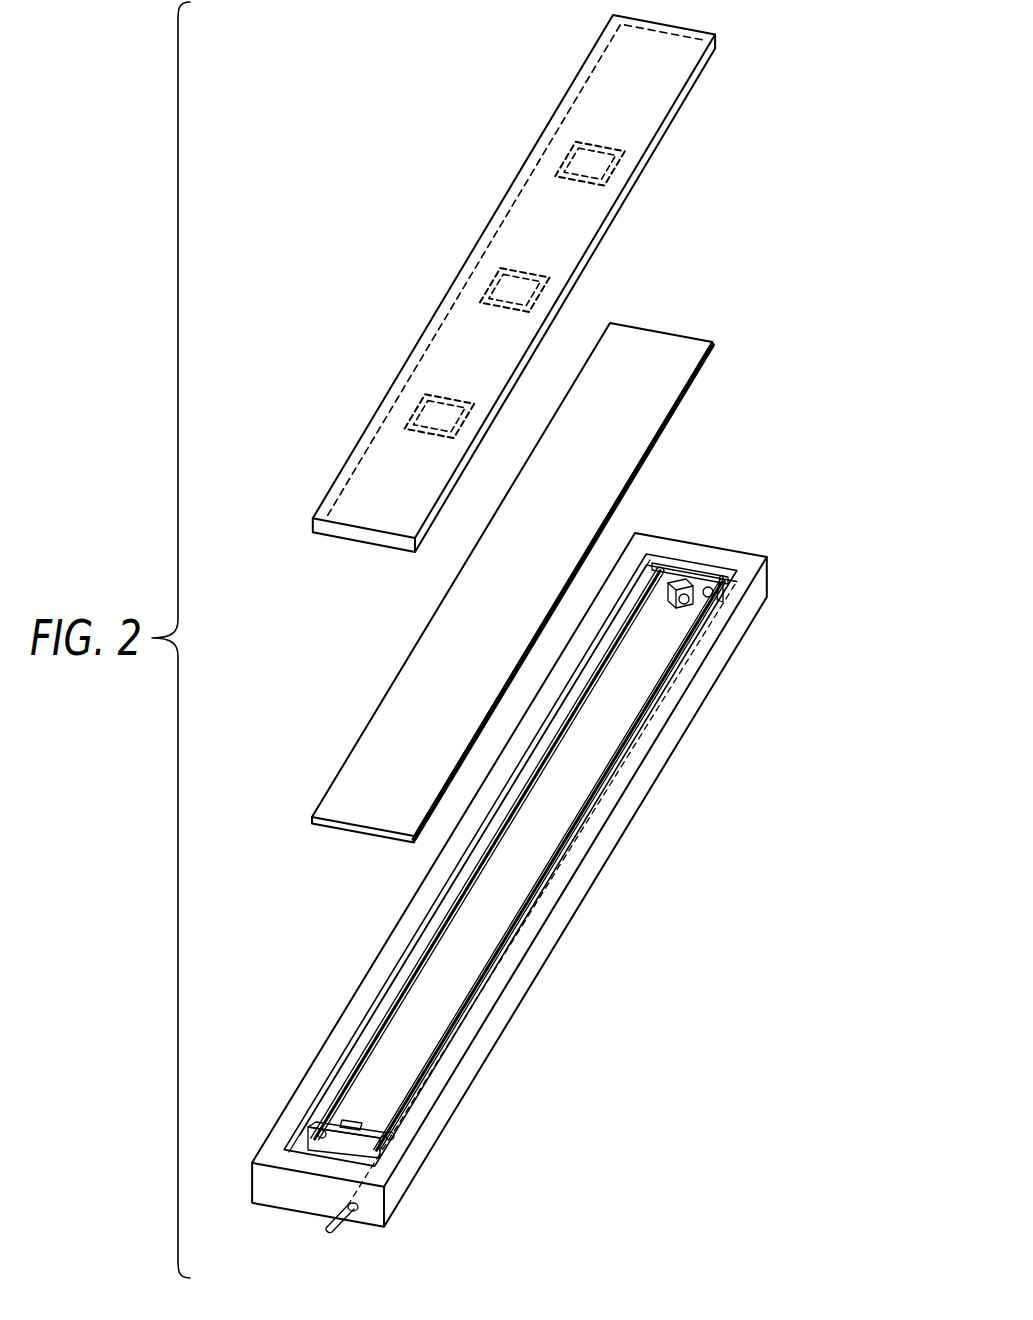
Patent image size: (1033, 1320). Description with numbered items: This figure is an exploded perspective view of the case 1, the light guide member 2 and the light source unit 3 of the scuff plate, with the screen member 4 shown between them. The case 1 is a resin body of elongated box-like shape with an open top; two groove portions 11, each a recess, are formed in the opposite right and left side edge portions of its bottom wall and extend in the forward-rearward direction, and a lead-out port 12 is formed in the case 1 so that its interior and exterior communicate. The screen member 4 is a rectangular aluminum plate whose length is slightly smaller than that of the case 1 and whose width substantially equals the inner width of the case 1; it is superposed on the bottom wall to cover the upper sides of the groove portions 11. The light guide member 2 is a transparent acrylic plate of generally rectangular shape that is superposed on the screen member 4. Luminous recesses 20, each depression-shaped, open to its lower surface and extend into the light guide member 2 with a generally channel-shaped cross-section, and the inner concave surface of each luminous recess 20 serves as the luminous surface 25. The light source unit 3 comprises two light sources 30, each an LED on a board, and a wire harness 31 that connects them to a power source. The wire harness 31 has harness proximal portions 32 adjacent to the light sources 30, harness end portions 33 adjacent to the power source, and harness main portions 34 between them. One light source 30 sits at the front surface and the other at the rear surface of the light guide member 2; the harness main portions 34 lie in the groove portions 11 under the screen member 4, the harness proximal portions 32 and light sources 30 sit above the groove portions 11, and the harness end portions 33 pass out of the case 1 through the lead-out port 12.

The case 1 is at (768, 575).
The light guide member 2 is at (672, 85).
The light source unit 3 is at (714, 576).
The screen member 4 is at (680, 373).
The groove portions 11 is at (695, 630).
The lead-out port 12 is at (356, 1212).
The luminous recesses 20 is at (566, 146).
The luminous surface 25 is at (590, 150).
The light sources 30 is at (682, 588).
The wire harness 31 is at (645, 570).
The harness proximal portions 32 is at (718, 598).
The harness end portions 33 is at (325, 1222).
The harness main portions 34 is at (610, 770).